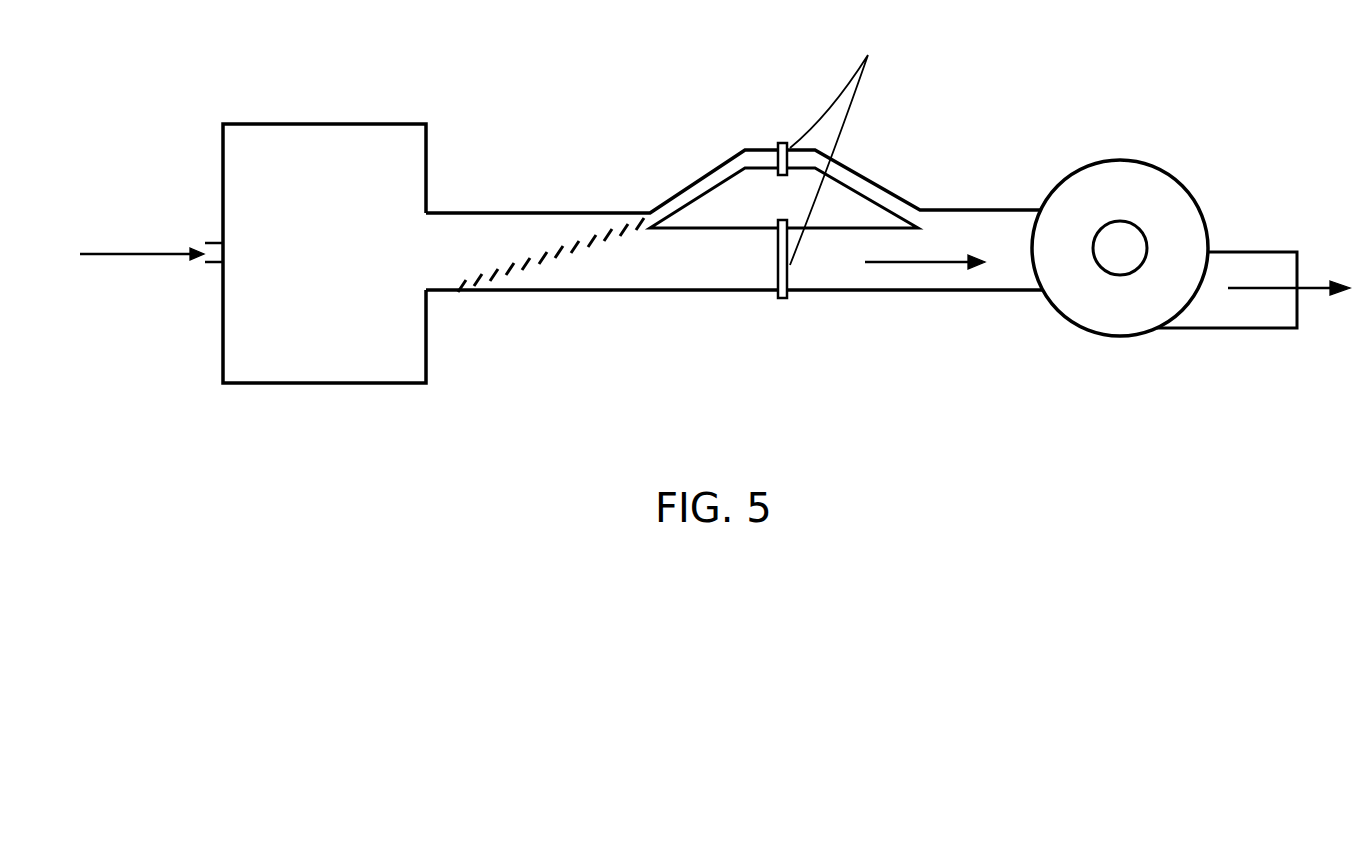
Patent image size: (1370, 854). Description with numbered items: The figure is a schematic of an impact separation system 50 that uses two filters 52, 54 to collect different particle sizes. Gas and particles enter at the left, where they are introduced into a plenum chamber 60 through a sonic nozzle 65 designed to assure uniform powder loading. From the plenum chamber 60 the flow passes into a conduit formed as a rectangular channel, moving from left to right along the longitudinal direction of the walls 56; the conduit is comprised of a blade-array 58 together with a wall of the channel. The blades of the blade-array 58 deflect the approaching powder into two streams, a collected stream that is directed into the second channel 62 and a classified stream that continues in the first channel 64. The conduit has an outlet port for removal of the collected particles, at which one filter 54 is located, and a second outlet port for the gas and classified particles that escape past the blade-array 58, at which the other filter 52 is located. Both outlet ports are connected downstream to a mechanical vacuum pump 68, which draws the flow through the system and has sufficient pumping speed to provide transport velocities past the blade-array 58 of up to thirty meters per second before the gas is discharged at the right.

The impact separation system 50 is at (888, 232).
The filter 52 is at (784, 300).
The filter 54 is at (783, 143).
The walls 56 is at (588, 291).
The blade-array 58 is at (522, 284).
The plenum chamber 60 is at (343, 358).
The second channel 62 is at (700, 179).
The first channel 64 is at (716, 276).
The sonic nozzle 65 is at (218, 264).
The mechanical vacuum pump 68 is at (1201, 202).